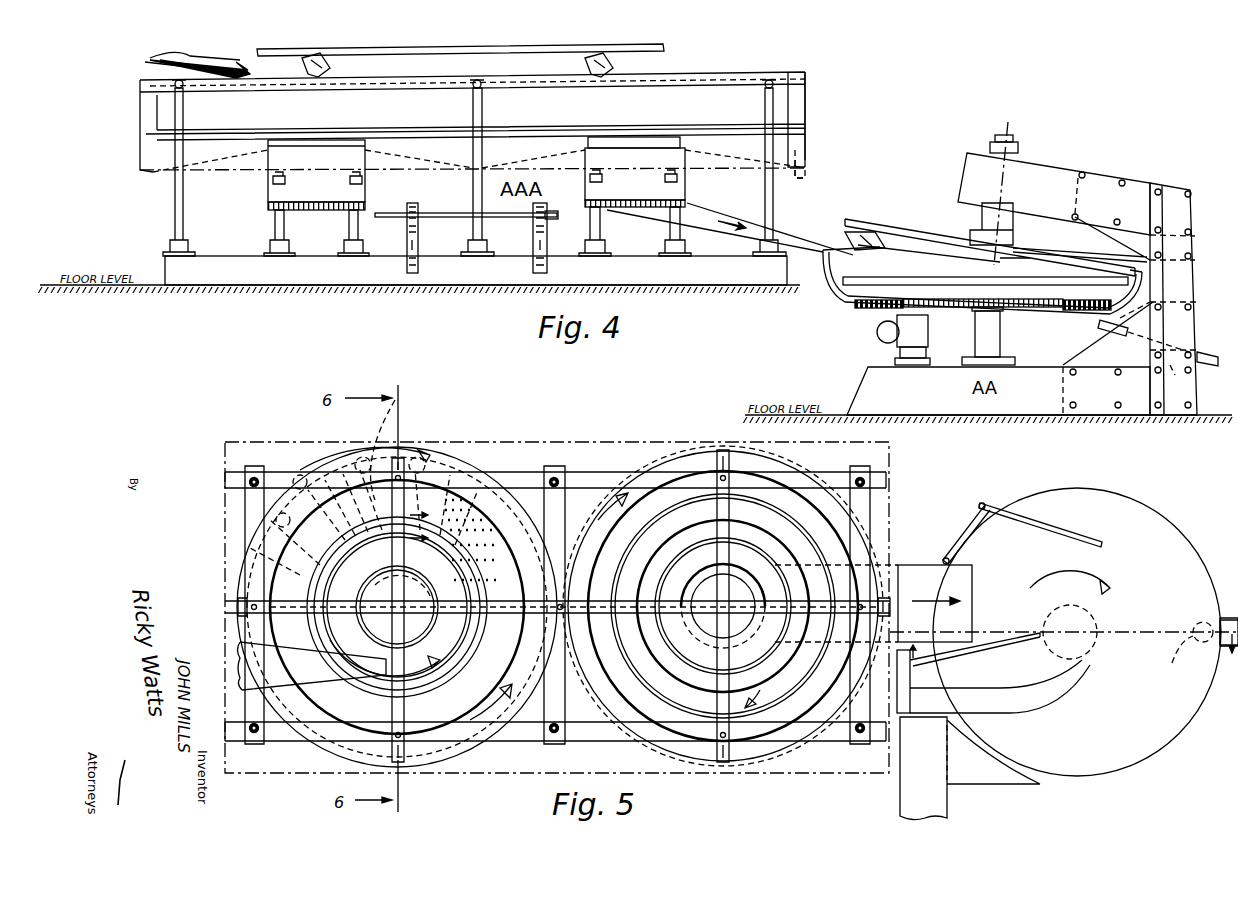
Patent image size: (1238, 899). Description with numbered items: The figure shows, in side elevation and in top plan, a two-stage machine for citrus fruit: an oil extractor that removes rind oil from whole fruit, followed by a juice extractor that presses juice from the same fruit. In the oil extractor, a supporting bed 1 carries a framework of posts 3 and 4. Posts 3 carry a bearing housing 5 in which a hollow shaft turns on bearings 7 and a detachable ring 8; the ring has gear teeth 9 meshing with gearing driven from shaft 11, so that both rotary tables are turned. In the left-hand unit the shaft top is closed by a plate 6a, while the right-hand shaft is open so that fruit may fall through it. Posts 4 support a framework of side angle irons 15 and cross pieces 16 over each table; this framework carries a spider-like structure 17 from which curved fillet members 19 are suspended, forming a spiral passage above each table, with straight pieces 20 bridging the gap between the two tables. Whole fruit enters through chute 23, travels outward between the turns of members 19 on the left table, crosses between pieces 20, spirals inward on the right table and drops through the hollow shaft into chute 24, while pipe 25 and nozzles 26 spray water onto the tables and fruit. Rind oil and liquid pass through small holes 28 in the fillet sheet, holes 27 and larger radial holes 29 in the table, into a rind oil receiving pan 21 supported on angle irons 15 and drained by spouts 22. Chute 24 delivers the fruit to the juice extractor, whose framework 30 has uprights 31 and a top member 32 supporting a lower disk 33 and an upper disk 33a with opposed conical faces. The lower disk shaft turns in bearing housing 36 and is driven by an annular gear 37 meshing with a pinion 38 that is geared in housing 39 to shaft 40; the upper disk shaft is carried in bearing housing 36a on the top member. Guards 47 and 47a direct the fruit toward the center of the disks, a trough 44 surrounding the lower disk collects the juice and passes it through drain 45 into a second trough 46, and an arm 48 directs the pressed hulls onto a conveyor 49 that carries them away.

In FIG. 4, the supporting bed 1 is at (470, 266).
In FIG. 4, the posts 3 is at (275, 228).
In FIG. 4, the posts 4 is at (184, 214).
In FIG. 4, the bearing housing 5 is at (366, 190).
In FIG. 5, the plate 6a is at (420, 642).
In FIG. 5, the bearings 7 is at (424, 528).
In FIG. 5, the detachable ring 8 is at (1064, 666).
In FIG. 4, the gear teeth 9 is at (268, 206).
In FIG. 4, the shaft 11 is at (380, 218).
In FIG. 4, the angle irons 15 is at (388, 86).
In FIG. 5, the angle irons 15 is at (286, 486).
In FIG. 4, the angle irons 16 is at (485, 86).
In FIG. 5, the angle irons 16 is at (242, 500).
In FIG. 5, the spider-like structure 17 is at (345, 614).
In FIG. 5, the members 19 is at (300, 566).
In FIG. 5, the straight pieces 20 is at (520, 640).
In FIG. 4, the rind oil receiving pan 21 is at (806, 134).
In FIG. 4, the drain spouts 22 is at (806, 170).
In FIG. 4, the chute 23 is at (150, 62).
In FIG. 5, the chute 23 is at (245, 668).
In FIG. 4, the chute 24 is at (780, 240).
In FIG. 5, the chute 24 is at (908, 568).
In FIG. 4, the pipe 25 is at (480, 84).
In FIG. 4, the nozzles 26 is at (330, 66).
In FIG. 5, the holes 27 is at (298, 540).
In FIG. 5, the small holes 28 is at (492, 506).
In FIG. 5, the radially extending holes 29 is at (352, 460).
In FIG. 4, the supporting framework 30 is at (1040, 396).
In FIG. 4, the uprights 31 is at (1160, 308).
In FIG. 4, the top member 32 is at (1042, 176).
In FIG. 4, the lower disk 33 is at (1078, 286).
In FIG. 4, the upper disk 33a is at (1018, 248).
In FIG. 4, the bearing housing 36 is at (1000, 340).
In FIG. 4, the bearing housing 36a is at (985, 218).
In FIG. 4, the annular gear 37 is at (955, 310).
In FIG. 4, the pinion 38 is at (897, 318).
In FIG. 4, the housing 39 is at (913, 350).
In FIG. 4, the shaft 40 is at (886, 334).
In FIG. 4, the fruit juice collecting trough 44 is at (830, 290).
In FIG. 4, the drain 45 is at (1116, 332).
In FIG. 5, the drain 45 is at (1176, 650).
In FIG. 4, the second trough 46 is at (1176, 368).
In FIG. 5, the second trough 46 is at (1226, 616).
In FIG. 4, the guard 47 is at (882, 246).
In FIG. 5, the guard 47 is at (1030, 516).
In FIG. 5, the guard 47a is at (986, 648).
In FIG. 5, the arm 48 is at (992, 700).
In FIG. 5, the conveyor 49 is at (970, 768).